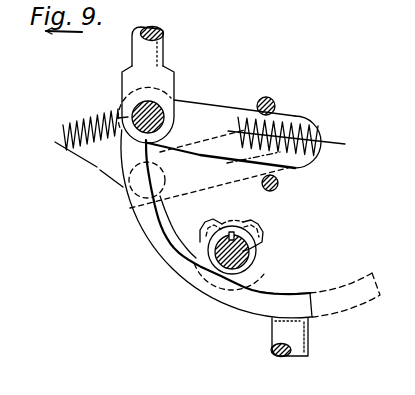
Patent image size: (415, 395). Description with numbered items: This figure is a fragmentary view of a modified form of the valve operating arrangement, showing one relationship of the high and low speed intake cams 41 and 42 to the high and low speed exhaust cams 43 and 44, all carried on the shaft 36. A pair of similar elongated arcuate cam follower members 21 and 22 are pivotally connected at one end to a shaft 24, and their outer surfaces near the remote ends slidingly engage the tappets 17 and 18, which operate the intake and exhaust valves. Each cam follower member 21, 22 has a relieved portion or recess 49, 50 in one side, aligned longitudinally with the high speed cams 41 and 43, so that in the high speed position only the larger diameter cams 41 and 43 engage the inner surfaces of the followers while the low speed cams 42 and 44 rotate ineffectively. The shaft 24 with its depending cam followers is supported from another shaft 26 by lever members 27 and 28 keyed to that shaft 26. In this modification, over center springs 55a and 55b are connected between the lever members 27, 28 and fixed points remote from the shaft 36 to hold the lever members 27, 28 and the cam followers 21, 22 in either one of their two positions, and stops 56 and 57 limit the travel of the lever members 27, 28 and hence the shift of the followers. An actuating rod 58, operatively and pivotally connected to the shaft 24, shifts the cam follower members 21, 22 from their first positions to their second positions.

The actuating rod 58 is at (165, 44).
The shaft 24 is at (169, 101).
The lever member 27 is at (192, 109).
The lever member 28 is at (225, 101).
The stop 56 is at (271, 98).
The over center spring 55a is at (277, 117).
The shaft 26 is at (307, 127).
The stop 57 is at (279, 184).
The over center spring 55b is at (85, 123).
The cam follower member 21 is at (250, 224).
The cam follower member 22 is at (300, 293).
The recess 49 is at (153, 237).
The recess 50 is at (159, 243).
The shaft 36 is at (250, 263).
The high speed intake cam 41 is at (205, 223).
The low speed intake cam 42 is at (229, 230).
The high speed exhaust cam 43 is at (257, 244).
The low speed exhaust cam 44 is at (263, 237).
The tappet 17 is at (320, 337).
The tappet 18 is at (310, 337).